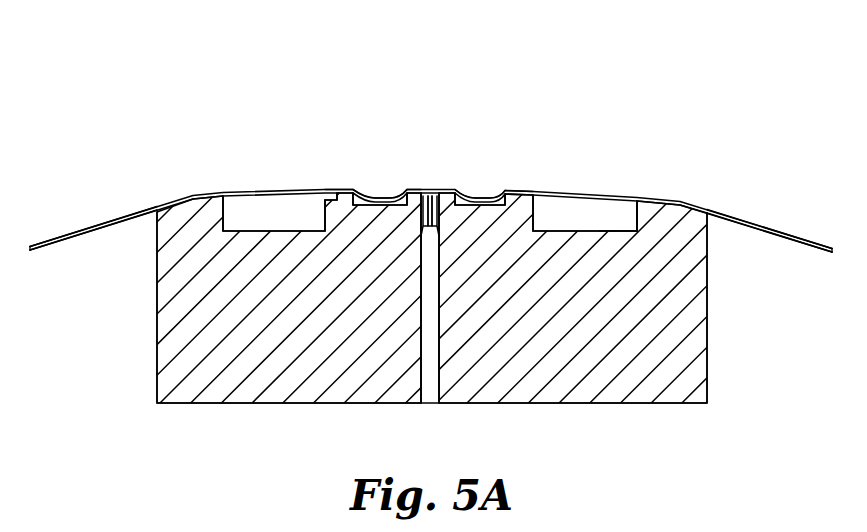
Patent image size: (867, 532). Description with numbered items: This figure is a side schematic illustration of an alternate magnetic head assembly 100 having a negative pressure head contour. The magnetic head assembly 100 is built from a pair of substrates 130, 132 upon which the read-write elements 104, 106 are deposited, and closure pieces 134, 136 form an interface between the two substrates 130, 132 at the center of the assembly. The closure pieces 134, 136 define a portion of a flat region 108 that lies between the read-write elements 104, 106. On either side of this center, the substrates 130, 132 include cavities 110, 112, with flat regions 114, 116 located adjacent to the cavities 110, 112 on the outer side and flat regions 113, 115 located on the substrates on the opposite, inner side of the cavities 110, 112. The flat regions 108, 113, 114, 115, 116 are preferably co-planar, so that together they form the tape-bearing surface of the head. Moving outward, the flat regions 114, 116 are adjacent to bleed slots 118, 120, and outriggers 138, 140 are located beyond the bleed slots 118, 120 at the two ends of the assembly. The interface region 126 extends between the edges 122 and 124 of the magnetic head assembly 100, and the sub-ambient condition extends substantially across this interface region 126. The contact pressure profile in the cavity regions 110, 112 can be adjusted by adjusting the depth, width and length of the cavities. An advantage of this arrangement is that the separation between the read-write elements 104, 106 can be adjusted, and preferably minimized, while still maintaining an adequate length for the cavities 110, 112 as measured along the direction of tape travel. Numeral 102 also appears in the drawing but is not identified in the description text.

The magnetic head assembly 100 is at (153, 357).
The contact pad 102 is at (327, 222).
The read-write element 104 is at (423, 193).
The read-write element 106 is at (440, 193).
The flat region 108 is at (433, 193).
The cavity 110 is at (363, 193).
The cavity 112 is at (505, 193).
The flat region 113 is at (412, 193).
The flat region 114 is at (337, 195).
The flat region 115 is at (453, 193).
The flat region 116 is at (527, 193).
The bleed slot 118 is at (232, 210).
The bleed slot 120 is at (628, 210).
The edge 122 is at (322, 193).
The edge 124 is at (533, 210).
The interface region 126 is at (381, 76).
The substrate 130 is at (330, 392).
The substrate 132 is at (569, 394).
The closure piece 134 is at (421, 237).
The closure piece 136 is at (439, 237).
The outrigger 138 is at (180, 205).
The outrigger 140 is at (707, 230).